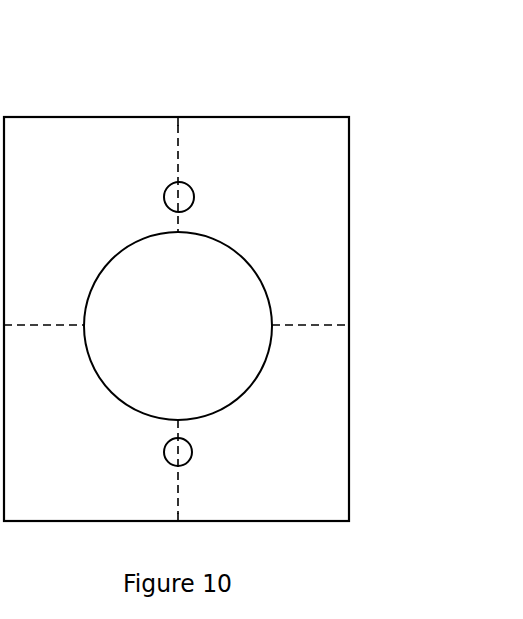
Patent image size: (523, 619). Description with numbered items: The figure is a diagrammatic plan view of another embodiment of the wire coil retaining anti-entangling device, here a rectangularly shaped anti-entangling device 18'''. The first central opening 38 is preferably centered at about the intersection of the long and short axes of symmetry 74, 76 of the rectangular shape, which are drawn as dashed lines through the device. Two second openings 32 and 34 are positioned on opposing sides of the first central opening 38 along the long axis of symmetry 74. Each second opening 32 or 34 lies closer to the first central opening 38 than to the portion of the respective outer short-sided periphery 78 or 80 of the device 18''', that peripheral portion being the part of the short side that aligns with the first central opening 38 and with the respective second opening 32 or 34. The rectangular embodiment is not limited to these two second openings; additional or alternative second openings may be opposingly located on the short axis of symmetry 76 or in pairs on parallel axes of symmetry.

The rectangularly shaped anti-entangling device 18''' is at (176, 273).
The second opening 32 is at (165, 197).
The second opening 34 is at (192, 453).
The first central opening 38 is at (152, 334).
The long axis of symmetry 74 is at (190, 155).
The short axis of symmetry 76 is at (296, 314).
The outer short-sided periphery portion 78 is at (168, 122).
The outer short-sided periphery portion 80 is at (168, 500).